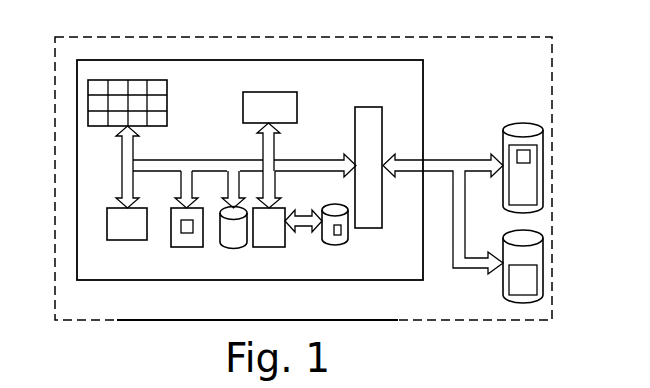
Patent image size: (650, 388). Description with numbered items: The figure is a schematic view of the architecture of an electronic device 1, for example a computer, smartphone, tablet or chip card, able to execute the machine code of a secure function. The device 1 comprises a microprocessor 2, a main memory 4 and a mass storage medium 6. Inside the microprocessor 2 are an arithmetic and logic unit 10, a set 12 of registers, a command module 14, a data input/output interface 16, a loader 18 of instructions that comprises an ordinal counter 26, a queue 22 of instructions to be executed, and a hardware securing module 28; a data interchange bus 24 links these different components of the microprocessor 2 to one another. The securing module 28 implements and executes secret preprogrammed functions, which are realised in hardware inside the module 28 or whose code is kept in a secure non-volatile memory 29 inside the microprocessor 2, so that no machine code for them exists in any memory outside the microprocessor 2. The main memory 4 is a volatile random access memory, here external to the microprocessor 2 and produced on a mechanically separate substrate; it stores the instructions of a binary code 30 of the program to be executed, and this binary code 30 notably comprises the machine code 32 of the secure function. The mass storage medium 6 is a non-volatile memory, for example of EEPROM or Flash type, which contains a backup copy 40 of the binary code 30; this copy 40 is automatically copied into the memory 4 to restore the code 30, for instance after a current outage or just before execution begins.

The electronic device 1 is at (568, 50).
The microprocessor 2 is at (66, 250).
The main memory 4 is at (556, 129).
The mass storage medium 6 is at (558, 250).
The arithmetic and logic unit 10 is at (118, 226).
The set of registers 12 is at (178, 91).
The command module 14 is at (297, 103).
The data input/output interface 16 is at (372, 218).
The loader of instructions 18 is at (176, 258).
The queue of instructions 22 is at (238, 249).
The data interchange bus 24 is at (188, 160).
The ordinal counter 26 is at (186, 233).
The hardware securing module 28 is at (270, 258).
The secure non-volatile memory 29 is at (333, 256).
The binary code 30 is at (550, 148).
The machine code of a secure function 32 is at (543, 156).
The backup copy 40 is at (558, 283).